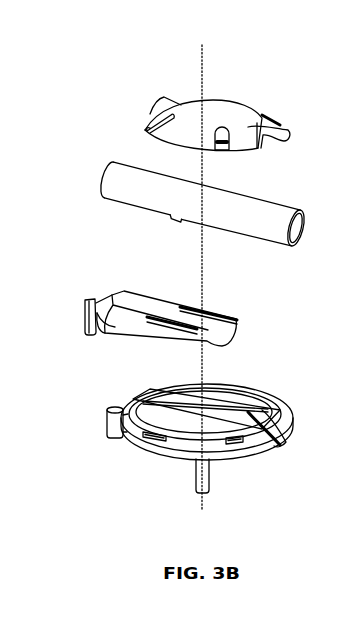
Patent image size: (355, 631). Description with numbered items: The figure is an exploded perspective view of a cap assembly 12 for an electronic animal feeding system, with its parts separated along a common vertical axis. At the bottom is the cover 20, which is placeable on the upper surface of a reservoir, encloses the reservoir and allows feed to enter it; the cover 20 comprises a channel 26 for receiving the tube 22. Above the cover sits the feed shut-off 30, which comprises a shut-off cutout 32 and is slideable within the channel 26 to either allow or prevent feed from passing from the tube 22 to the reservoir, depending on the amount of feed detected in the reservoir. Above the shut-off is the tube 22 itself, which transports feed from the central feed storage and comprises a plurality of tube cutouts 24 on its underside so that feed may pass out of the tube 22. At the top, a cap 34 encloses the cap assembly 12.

The cap assembly 12 is at (97, 109).
The cover 20 is at (227, 426).
The tube 22 is at (178, 227).
The tube cutouts 24 is at (186, 216).
The channel 26 is at (267, 437).
The feed shut-off 30 is at (143, 310).
The shut-off cutout 32 is at (182, 332).
The cap 34 is at (242, 111).